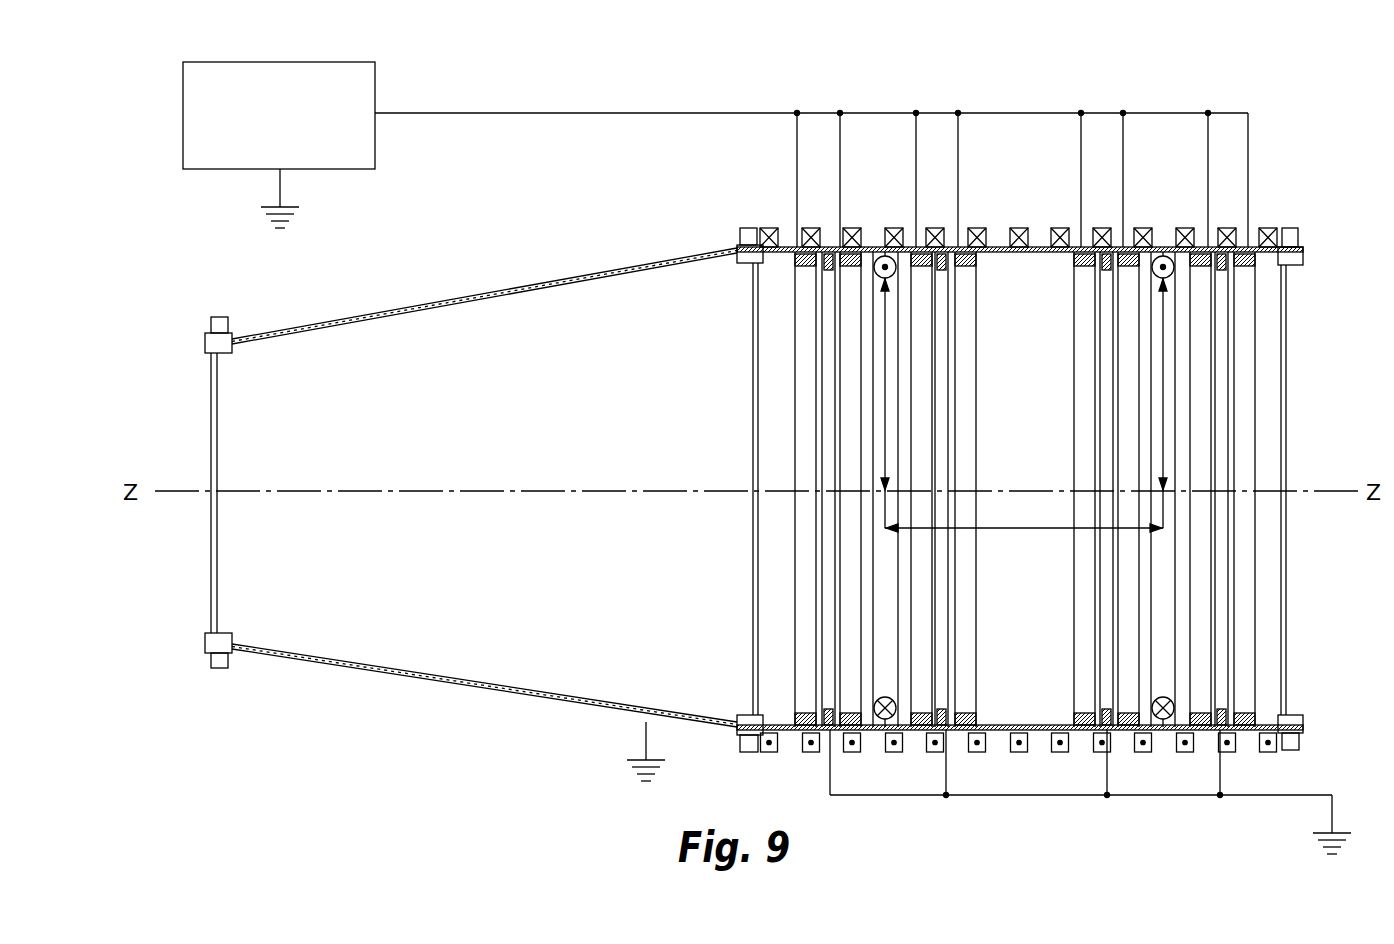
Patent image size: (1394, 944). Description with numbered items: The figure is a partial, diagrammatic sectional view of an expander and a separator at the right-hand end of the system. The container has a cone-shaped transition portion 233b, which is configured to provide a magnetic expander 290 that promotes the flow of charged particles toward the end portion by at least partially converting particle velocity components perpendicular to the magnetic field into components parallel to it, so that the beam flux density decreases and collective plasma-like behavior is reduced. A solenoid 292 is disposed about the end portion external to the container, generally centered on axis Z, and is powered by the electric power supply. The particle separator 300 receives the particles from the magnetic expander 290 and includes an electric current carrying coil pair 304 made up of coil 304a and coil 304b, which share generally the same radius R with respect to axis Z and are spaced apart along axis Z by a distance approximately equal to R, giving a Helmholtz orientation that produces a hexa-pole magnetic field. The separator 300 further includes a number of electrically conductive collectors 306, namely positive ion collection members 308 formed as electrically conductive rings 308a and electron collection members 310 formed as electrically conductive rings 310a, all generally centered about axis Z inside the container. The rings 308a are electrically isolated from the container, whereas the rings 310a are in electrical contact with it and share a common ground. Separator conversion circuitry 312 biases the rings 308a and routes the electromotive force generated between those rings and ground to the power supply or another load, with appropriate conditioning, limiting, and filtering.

The separator conversion circuitry 312 is at (378, 80).
The transition portion 233b is at (412, 302).
The magnetic expander 290 is at (484, 692).
The solenoid 292 is at (1279, 228).
The particle separator 300 is at (751, 398).
The coil pair 304 is at (1130, 252).
The coil 304a is at (882, 720).
The coil 304b is at (1162, 720).
The collectors 306 is at (778, 518).
The positive ion collection members 308 is at (840, 636).
The electrically conductive rings 308a is at (840, 386).
The electron collection members 310 is at (820, 262).
The electrically conductive rings 310a is at (820, 714).
The radius R is at (1162, 432).